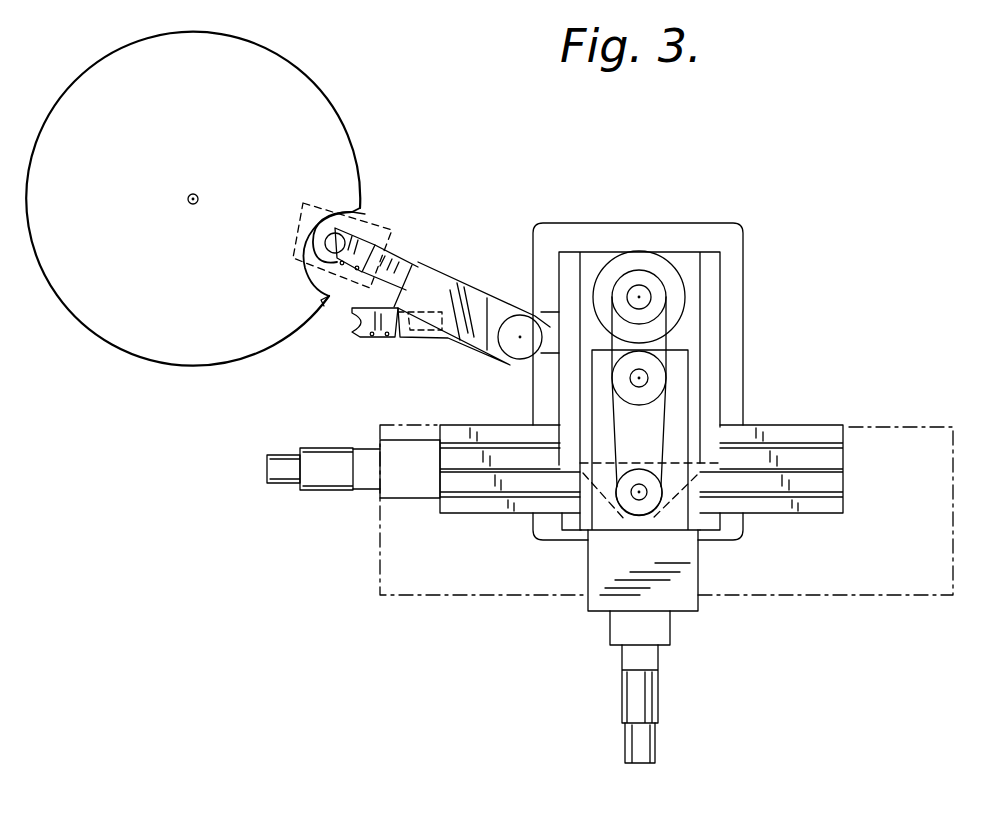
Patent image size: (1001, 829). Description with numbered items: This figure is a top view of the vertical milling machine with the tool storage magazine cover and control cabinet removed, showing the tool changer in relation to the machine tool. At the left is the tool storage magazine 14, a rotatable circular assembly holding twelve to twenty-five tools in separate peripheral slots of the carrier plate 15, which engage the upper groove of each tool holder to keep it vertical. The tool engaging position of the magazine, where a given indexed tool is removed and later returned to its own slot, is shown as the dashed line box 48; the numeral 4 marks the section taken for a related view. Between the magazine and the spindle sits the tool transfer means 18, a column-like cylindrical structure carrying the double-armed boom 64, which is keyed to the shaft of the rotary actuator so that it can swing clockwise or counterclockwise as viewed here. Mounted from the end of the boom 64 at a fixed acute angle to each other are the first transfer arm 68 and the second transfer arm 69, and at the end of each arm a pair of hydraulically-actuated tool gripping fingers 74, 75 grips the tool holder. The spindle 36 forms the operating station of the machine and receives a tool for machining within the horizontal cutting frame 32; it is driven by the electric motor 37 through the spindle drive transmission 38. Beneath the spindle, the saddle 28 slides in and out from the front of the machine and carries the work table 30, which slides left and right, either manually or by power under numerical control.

The tool storage magazine 14 is at (318, 71).
The carrier plate 15 is at (321, 310).
The section line for FIG. 4 is at (306, 207).
The tool engaging position 48 is at (372, 208).
The tool gripping finger 74 is at (370, 234).
The first transfer arm 68 is at (403, 268).
The boom 64 is at (462, 284).
The second transfer arm 69 is at (420, 332).
The tool gripping finger 75 is at (356, 328).
The tool transfer means 18 is at (518, 350).
The electric motor 37 is at (652, 262).
The spindle drive transmission 38 is at (683, 394).
The spindle 36 is at (620, 510).
The work table 30 is at (808, 508).
The horizontal cutting frame 32 is at (827, 597).
The saddle 28 is at (690, 603).